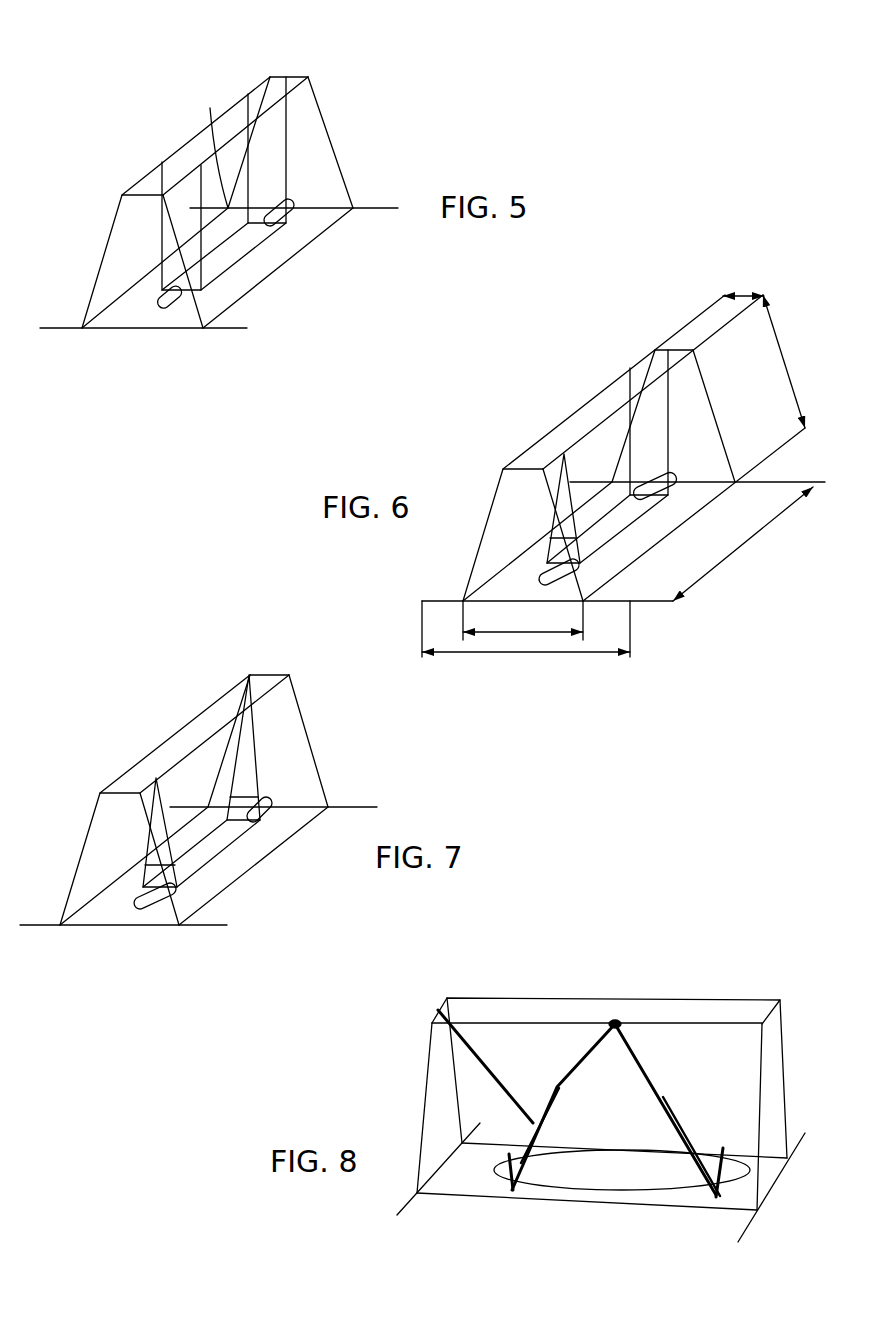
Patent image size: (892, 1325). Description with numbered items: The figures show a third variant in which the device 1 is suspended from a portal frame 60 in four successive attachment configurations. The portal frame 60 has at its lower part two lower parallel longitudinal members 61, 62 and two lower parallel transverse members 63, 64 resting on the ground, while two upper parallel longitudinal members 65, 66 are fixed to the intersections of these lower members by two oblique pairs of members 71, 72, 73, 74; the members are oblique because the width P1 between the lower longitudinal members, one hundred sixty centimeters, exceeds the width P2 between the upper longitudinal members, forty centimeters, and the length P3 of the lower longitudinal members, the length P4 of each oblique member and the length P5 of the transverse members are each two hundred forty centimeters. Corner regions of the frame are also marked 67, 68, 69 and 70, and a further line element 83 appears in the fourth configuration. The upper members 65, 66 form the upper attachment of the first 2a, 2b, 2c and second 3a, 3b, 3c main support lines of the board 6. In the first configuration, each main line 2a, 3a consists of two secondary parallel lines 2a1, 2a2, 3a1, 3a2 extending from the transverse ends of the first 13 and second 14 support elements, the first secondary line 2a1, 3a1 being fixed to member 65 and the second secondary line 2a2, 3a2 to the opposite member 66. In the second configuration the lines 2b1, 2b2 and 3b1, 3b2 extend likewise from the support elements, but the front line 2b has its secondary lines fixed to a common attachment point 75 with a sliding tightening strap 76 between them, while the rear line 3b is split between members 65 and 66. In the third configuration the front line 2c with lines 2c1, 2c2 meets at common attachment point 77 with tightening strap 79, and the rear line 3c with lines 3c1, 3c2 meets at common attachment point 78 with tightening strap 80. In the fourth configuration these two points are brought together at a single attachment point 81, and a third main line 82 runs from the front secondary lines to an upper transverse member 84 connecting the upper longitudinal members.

In FIG. 5, the device 1 is at (155, 247).
In FIG. 6, the device 1 is at (537, 518).
In FIG. 7, the device 1 is at (130, 845).
In FIG. 8, the device 1 is at (487, 1092).
In FIG. 5, the first main support line 2a is at (202, 165).
In FIG. 5, the first secondary line 2a1 is at (203, 273).
In FIG. 5, the second secondary line 2a2 is at (160, 180).
In FIG. 6, the first main support line 2b is at (571, 468).
In FIG. 6, the first secondary line 2b1 is at (583, 552).
In FIG. 6, the second secondary line 2b2 is at (558, 453).
In FIG. 7, the first main support line 2c is at (170, 793).
In FIG. 8, the first main support line 2c is at (583, 1048).
In FIG. 7, the first secondary line 2c1 is at (178, 873).
In FIG. 8, the first secondary line 2c1 is at (553, 1135).
In FIG. 7, the second secondary line 2c2 is at (153, 788).
In FIG. 8, the second secondary line 2c2 is at (545, 1108).
In FIG. 5, the second main support line 3a is at (249, 93).
In FIG. 5, the first secondary line 3a1 is at (288, 182).
In FIG. 5, the second secondary line 3a2 is at (243, 110).
In FIG. 6, the second main support line 3b is at (632, 366).
In FIG. 6, the first secondary line 3b1 is at (670, 452).
In FIG. 6, the second secondary line 3b2 is at (628, 385).
In FIG. 7, the second main support line 3c is at (249, 672).
In FIG. 8, the second main support line 3c is at (647, 1047).
In FIG. 7, the first secondary line 3c1 is at (253, 757).
In FIG. 7, the second secondary line 3c2 is at (238, 727).
In FIG. 5, the board 6 is at (263, 248).
In FIG. 6, the board 6 is at (643, 528).
In FIG. 7, the board 6 is at (237, 852).
In FIG. 8, the board 6 is at (622, 1190).
In FIG. 5, the first support element 13 is at (176, 296).
In FIG. 6, the first support element 13 is at (540, 577).
In FIG. 7, the first support element 13 is at (133, 902).
In FIG. 5, the second support element 14 is at (277, 227).
In FIG. 6, the second support element 14 is at (656, 496).
In FIG. 7, the second support element 14 is at (253, 827).
In FIG. 5, the portal frame 60 is at (374, 102).
In FIG. 6, the portal frame 60 is at (723, 398).
In FIG. 7, the portal frame 60 is at (313, 727).
In FIG. 8, the portal frame 60 is at (784, 983).
In FIG. 5, the lower parallel longitudinal member 61 is at (273, 273).
In FIG. 5, the lower parallel longitudinal member 62 is at (110, 303).
In FIG. 5, the lower parallel transverse member 63 is at (122, 329).
In FIG. 5, the lower parallel transverse member 64 is at (384, 208).
In FIG. 5, the upper parallel longitudinal member 65 is at (302, 90).
In FIG. 6, the upper parallel longitudinal member 65 is at (684, 363).
In FIG. 7, the upper parallel longitudinal member 65 is at (278, 688).
In FIG. 8, the upper parallel longitudinal member 65 is at (732, 1027).
In FIG. 5, the upper parallel longitudinal member 66 is at (133, 183).
In FIG. 6, the upper parallel longitudinal member 66 is at (515, 457).
In FIG. 7, the upper parallel longitudinal member 66 is at (113, 783).
In FIG. 8, the upper parallel longitudinal member 66 is at (645, 998).
In FIG. 5, the end face side edge 67 is at (203, 329).
In FIG. 5, the far end corner 68 is at (354, 207).
In FIG. 5, the far end bottom corner 69 is at (210, 146).
In FIG. 5, the near end bottom corner 70 is at (80, 327).
In FIG. 5, the oblique member 71 is at (198, 312).
In FIG. 5, the oblique member 72 is at (332, 142).
In FIG. 5, the oblique member 73 is at (255, 138).
In FIG. 5, the oblique member 74 is at (115, 214).
In FIG. 6, the common attachment point 75 is at (562, 455).
In FIG. 6, the tightening strap 76 is at (548, 560).
In FIG. 7, the common attachment point 77 is at (165, 800).
In FIG. 7, the common attachment point 78 is at (253, 725).
In FIG. 7, the tightening strap 79 is at (143, 880).
In FIG. 7, the tightening strap 80 is at (248, 787).
In FIG. 8, the single attachment point 81 is at (614, 1020).
In FIG. 8, the third main line 82 is at (467, 1052).
In FIG. 8, the reference bar 83 is at (437, 1008).
In FIG. 8, the upper transverse member 84 is at (430, 1018).
In FIG. 6, the width P1 is at (523, 620).
In FIG. 6, the width P2 is at (743, 283).
In FIG. 6, the length P3 is at (743, 544).
In FIG. 6, the length P4 is at (784, 361).
In FIG. 6, the length P5 is at (526, 639).